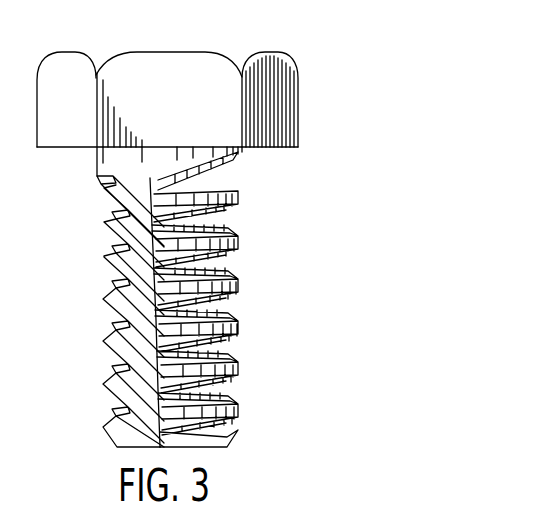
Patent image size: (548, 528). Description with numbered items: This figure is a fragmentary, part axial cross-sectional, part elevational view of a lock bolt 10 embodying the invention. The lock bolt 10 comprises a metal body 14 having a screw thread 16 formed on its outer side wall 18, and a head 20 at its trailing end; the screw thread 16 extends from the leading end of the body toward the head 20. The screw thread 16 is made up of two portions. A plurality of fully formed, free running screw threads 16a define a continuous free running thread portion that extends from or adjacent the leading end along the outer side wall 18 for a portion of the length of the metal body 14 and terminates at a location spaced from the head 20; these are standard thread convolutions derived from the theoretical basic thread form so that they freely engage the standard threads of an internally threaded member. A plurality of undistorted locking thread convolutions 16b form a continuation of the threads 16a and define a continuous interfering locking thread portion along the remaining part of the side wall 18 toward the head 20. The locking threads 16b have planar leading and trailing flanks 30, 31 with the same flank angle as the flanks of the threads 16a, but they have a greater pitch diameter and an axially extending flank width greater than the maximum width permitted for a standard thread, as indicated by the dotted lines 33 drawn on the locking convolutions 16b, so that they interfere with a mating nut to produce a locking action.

The lock bolt 10 is at (326, 68).
The head 20 is at (292, 102).
The metal body 14 is at (97, 158).
The outer side wall 18 is at (242, 150).
The screw thread 16 is at (254, 275).
The locking thread convolutions 16b is at (99, 262).
The free running screw threads 16a is at (100, 423).
The dotted lines 33 is at (115, 203).
The trailing flank 31 is at (117, 293).
The leading flank 30 is at (117, 303).